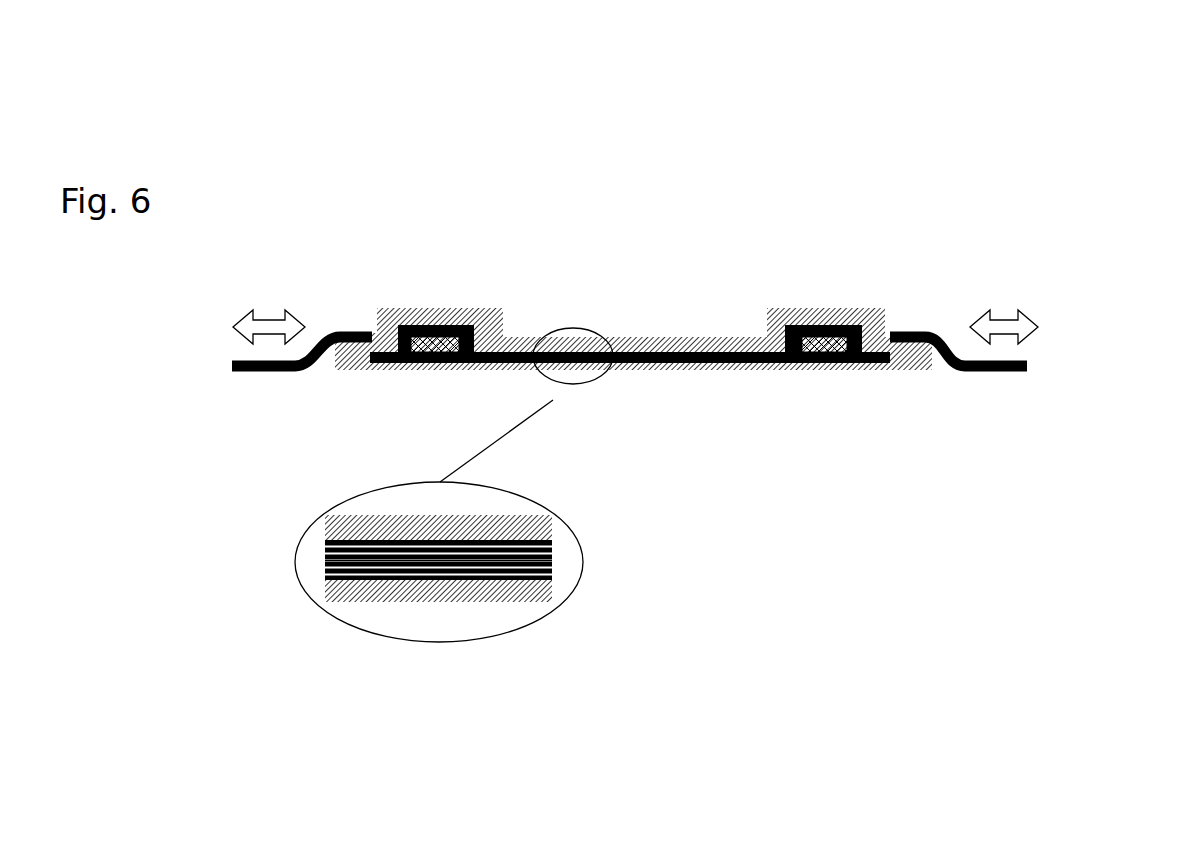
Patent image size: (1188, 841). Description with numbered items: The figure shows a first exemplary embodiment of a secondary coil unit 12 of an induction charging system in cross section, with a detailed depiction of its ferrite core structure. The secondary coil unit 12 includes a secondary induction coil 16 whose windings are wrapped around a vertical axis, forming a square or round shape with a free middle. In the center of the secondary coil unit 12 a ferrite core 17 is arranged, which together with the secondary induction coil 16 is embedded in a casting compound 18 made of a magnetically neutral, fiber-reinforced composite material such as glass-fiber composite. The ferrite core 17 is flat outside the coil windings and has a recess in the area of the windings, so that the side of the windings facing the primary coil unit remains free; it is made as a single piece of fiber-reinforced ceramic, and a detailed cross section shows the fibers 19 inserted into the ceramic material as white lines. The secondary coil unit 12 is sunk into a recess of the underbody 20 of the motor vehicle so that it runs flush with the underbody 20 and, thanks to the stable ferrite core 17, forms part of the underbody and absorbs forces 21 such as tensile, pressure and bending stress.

The secondary coil unit 12 is at (1033, 140).
The secondary induction coil 16 is at (427, 353).
The ferrite core 17 is at (723, 365).
The casting compound 18 is at (387, 310).
The fibers 19 is at (552, 567).
The underbody 20 is at (268, 372).
The forces 21 is at (272, 327).